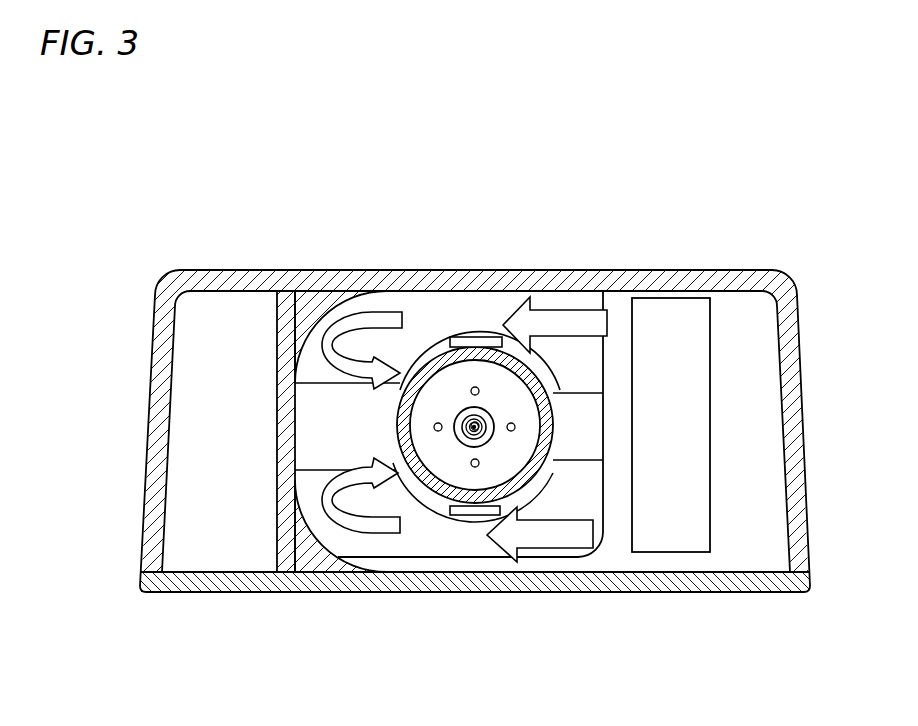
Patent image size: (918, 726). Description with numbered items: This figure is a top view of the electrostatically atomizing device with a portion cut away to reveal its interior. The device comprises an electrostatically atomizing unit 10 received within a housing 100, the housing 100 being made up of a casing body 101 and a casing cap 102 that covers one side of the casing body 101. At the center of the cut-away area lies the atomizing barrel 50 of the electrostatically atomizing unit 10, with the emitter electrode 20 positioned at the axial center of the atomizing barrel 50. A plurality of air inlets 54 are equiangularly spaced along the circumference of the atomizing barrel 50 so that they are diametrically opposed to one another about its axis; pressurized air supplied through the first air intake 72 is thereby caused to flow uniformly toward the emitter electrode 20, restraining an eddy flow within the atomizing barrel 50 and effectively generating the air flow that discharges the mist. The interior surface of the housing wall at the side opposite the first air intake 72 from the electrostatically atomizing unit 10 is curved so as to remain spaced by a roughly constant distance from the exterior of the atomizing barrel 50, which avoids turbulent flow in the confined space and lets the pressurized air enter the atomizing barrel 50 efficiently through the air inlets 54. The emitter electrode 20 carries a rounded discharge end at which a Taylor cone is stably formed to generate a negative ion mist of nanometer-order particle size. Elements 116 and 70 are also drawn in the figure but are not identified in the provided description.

The housing 100 is at (782, 278).
The casing body 101 is at (203, 592).
The casing cap 102 is at (212, 270).
The partition wall 116 is at (277, 442).
The fan housing 70 is at (431, 308).
The first air intake 72 is at (681, 328).
The electrostatically atomizing unit 10 is at (506, 437).
The air inlets 54 is at (530, 370).
The atomizing barrel 50 is at (523, 533).
The emitter electrode 20 is at (489, 437).